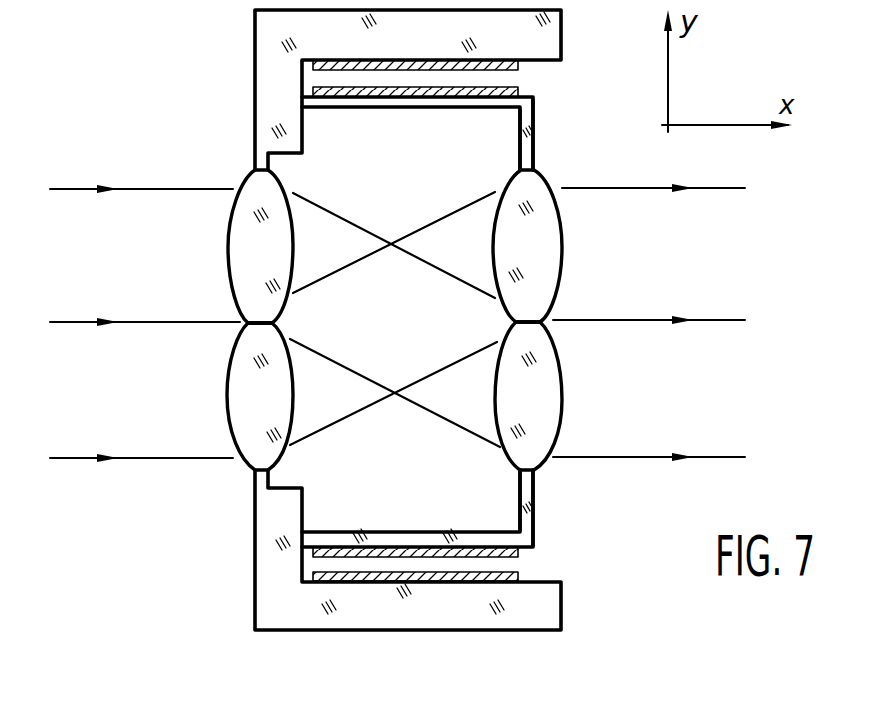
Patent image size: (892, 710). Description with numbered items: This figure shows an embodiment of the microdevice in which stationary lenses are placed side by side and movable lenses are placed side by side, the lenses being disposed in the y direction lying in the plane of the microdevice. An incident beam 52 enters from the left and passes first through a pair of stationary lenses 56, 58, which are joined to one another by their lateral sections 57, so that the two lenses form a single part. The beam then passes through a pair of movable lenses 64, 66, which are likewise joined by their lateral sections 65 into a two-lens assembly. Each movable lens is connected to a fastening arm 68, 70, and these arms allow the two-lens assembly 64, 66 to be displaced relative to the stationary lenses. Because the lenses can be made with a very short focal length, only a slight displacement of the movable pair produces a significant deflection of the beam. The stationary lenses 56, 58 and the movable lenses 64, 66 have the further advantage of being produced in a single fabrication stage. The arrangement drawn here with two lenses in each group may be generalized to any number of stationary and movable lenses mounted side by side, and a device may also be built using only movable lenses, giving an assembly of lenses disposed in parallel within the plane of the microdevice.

The incident beam 52 is at (164, 196).
The stationary lens 56 is at (228, 247).
The lateral sections 57 is at (256, 318).
The stationary lens 58 is at (240, 398).
The movable lens 64 is at (562, 247).
The lateral sections 65 is at (530, 320).
The movable lens 66 is at (545, 408).
The fastening arm 68 is at (534, 123).
The fastening arm 70 is at (528, 500).